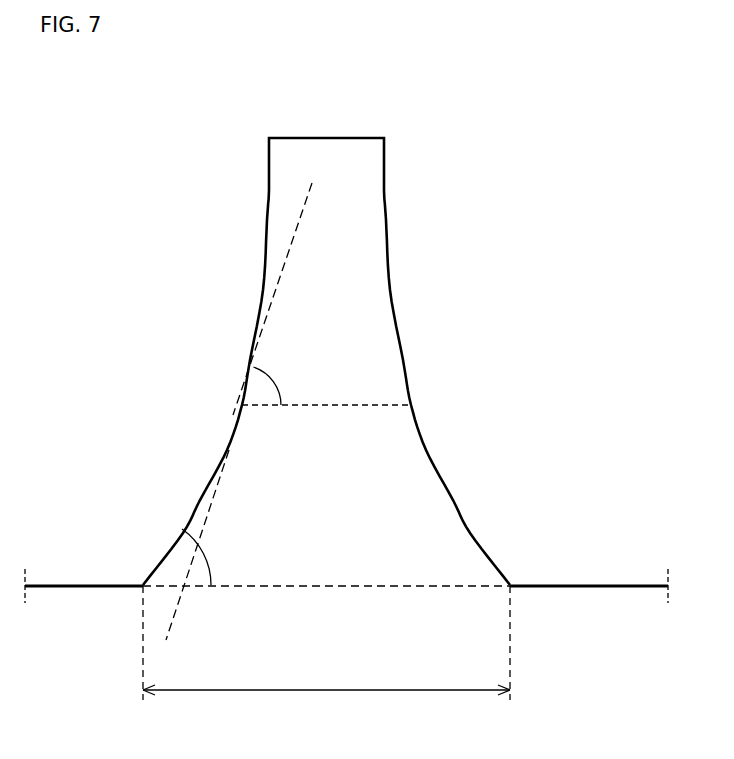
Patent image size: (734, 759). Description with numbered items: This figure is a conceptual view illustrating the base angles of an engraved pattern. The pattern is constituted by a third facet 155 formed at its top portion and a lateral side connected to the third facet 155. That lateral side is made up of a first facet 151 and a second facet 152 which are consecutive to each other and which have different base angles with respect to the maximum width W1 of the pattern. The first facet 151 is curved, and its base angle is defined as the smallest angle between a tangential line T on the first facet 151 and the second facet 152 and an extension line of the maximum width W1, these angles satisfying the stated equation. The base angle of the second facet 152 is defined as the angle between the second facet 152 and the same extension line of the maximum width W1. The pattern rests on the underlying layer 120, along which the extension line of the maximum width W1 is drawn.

The substrate / base layer 120 is at (69, 589).
The third facet 155 is at (329, 137).
The first facet 151 is at (262, 290).
The second facet 152 is at (199, 500).
The tangential line T is at (268, 241).
The maximum width of the engraved pattern W1 is at (326, 643).